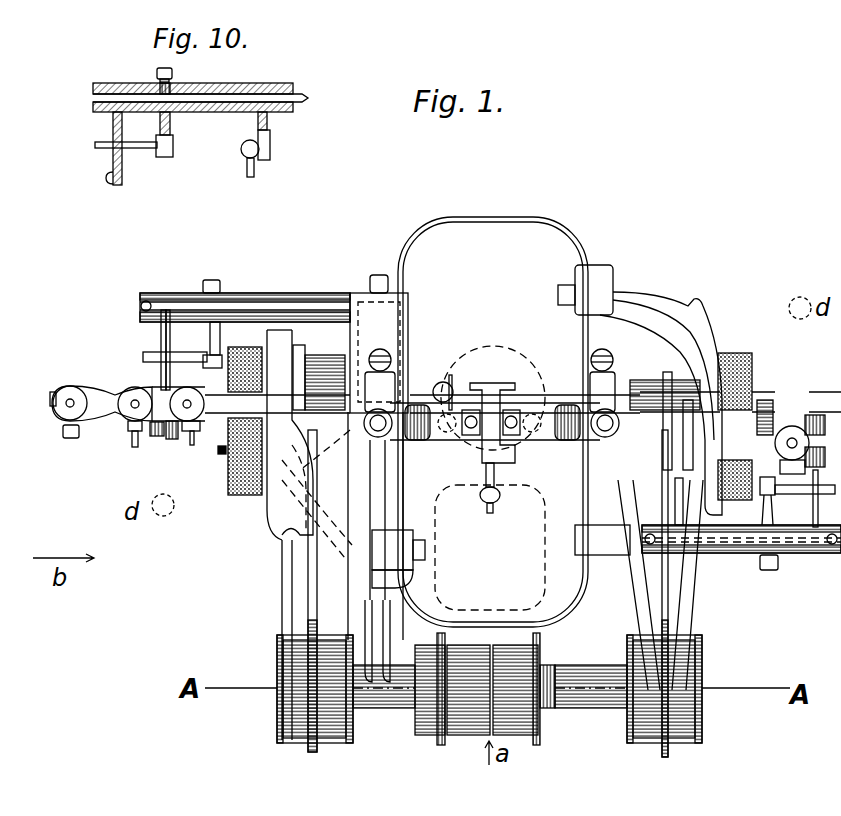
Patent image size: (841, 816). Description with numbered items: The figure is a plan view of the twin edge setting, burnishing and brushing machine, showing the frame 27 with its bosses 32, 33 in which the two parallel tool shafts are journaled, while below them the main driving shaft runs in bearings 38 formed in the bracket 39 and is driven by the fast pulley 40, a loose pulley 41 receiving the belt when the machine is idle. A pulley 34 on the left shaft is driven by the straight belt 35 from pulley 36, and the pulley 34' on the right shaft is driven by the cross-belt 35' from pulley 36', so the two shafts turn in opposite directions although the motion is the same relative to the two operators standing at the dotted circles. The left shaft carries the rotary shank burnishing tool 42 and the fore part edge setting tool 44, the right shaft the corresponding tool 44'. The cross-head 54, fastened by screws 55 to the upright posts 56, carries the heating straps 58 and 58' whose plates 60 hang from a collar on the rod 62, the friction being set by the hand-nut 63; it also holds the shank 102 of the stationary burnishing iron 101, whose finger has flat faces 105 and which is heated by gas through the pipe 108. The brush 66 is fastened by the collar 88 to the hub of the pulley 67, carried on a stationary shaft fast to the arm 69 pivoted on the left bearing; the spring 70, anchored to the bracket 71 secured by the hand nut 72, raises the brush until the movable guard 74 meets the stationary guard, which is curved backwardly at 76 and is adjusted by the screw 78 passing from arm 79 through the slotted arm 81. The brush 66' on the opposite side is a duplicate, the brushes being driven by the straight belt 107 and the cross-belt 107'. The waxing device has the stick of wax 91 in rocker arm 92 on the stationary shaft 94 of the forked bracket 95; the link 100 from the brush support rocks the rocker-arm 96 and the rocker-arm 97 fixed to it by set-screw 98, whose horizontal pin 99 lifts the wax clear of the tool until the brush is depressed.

In FIG. 1, the frame 27 is at (493, 422).
In FIG. 1, the boss 32 is at (375, 456).
In FIG. 1, the boss 33 is at (586, 400).
In FIG. 1, the pulley 34 is at (320, 494).
In FIG. 1, the pulley 34' is at (626, 380).
In FIG. 1, the straight belt 35 is at (327, 591).
In FIG. 1, the cross-belt 35' is at (653, 593).
In FIG. 1, the pulley 36 is at (333, 698).
In FIG. 1, the pulley 36' is at (637, 694).
In FIG. 1, the bearing 38 is at (428, 708).
In FIG. 1, the bracket 39 is at (428, 655).
In FIG. 1, the pulley 40 is at (468, 728).
In FIG. 1, the loose pulley 41 is at (522, 735).
In FIG. 1, the rotary shank burnishing tool 42 is at (108, 420).
In FIG. 1, the fore part edge setting tool 44 is at (138, 446).
In FIG. 1, the fore part edge setting tool 44' is at (796, 428).
In FIG. 1, the cross-head 54 is at (362, 426).
In FIG. 1, the screw 55 is at (392, 463).
In FIG. 1, the upright post 56 is at (364, 432).
In FIG. 1, the strap 58 is at (189, 461).
In FIG. 1, the strap 58' is at (798, 386).
In FIG. 1, the plate 60 is at (186, 410).
In FIG. 1, the rod 62 is at (178, 430).
In FIG. 1, the hand-nut 63 is at (200, 420).
In FIG. 1, the brush 66 is at (245, 442).
In FIG. 1, the brush 66' is at (760, 426).
In FIG. 1, the pulley 67 is at (299, 363).
In FIG. 1, the arm 69 is at (370, 590).
In FIG. 1, the spring 70 is at (391, 358).
In FIG. 1, the bracket 71 is at (396, 388).
In FIG. 1, the hand nut 72 is at (453, 391).
In FIG. 1, the guard 74 is at (272, 330).
In FIG. 1, the backwardly curved portion 76 is at (276, 542).
In FIG. 1, the screw 78 is at (425, 550).
In FIG. 1, the arm 79 is at (386, 546).
In FIG. 1, the arm 81 is at (413, 576).
In FIG. 1, the collar 88 is at (222, 455).
In FIG. 10, the stick of wax 91 is at (105, 178).
In FIG. 10, the rocker arm 92 is at (112, 122).
In FIG. 1, the rocker arm 92 is at (161, 340).
In FIG. 10, the stationary shaft 94 is at (306, 99).
In FIG. 1, the stationary shaft 94 is at (140, 306).
In FIG. 1, the forked bracket 95 is at (408, 296).
In FIG. 10, the rocker-arm 96 is at (255, 85).
In FIG. 1, the rocker-arm 96 is at (288, 300).
In FIG. 10, the rocker-arm 97 is at (155, 84).
In FIG. 1, the rocker-arm 97 is at (222, 292).
In FIG. 10, the set-screw 98 is at (176, 72).
In FIG. 1, the set-screw 98 is at (212, 280).
In FIG. 10, the horizontal pin 99 is at (138, 148).
In FIG. 1, the horizontal pin 99 is at (163, 310).
In FIG. 1, the link 100 is at (312, 365).
In FIG. 1, the stationary burnishing iron 101 is at (52, 405).
In FIG. 1, the shank 102 is at (68, 414).
In FIG. 1, the flat face 105 is at (62, 392).
In FIG. 1, the straight belt 107 is at (262, 640).
In FIG. 1, the cross-belt 107' is at (682, 585).
In FIG. 1, the pipe 108 is at (207, 356).